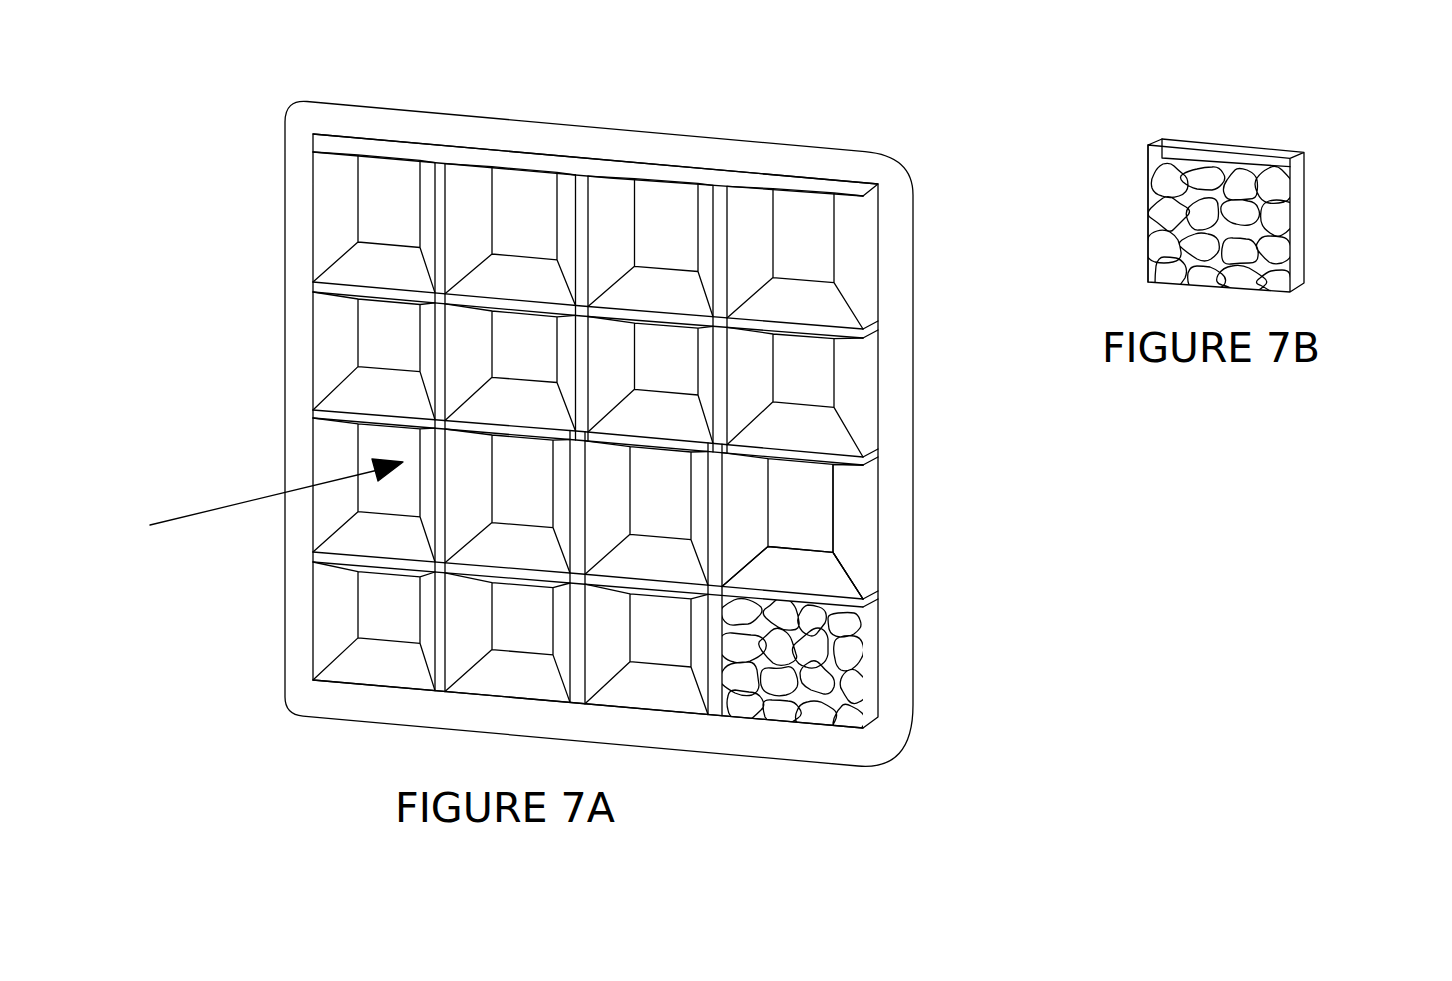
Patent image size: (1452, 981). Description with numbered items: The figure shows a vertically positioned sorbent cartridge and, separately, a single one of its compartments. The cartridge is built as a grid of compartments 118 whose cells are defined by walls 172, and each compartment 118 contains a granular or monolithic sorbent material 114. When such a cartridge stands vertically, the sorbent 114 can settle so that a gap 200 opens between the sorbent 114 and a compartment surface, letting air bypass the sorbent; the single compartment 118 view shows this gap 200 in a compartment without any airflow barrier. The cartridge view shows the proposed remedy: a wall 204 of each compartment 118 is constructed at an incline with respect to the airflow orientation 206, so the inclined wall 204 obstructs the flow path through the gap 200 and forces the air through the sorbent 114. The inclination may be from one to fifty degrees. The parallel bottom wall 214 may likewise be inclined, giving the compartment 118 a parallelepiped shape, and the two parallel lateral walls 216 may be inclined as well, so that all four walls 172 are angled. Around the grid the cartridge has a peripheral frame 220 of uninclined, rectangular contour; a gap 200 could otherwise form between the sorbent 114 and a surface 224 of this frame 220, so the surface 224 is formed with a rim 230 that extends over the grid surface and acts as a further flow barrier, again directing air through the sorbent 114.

In FIG. 7A, the sorbent material 114 is at (843, 668).
In FIG. 7B, the sorbent material 114 is at (1193, 220).
In FIG. 7B, the compartment 118 is at (1148, 155).
In FIG. 7B, the wall 172 is at (1283, 148).
In FIG. 7B, the gap 200 is at (1270, 162).
In FIG. 7A, the wall 204 is at (887, 526).
In FIG. 7A, the airflow orientation 206 is at (263, 500).
In FIG. 7A, the bottom wall 214 is at (818, 582).
In FIG. 7A, the lateral wall 216 is at (853, 532).
In FIG. 7A, the peripheral frame 220 is at (297, 381).
In FIG. 7A, the surface 224 is at (488, 145).
In FIG. 7A, the rim 230 is at (366, 149).